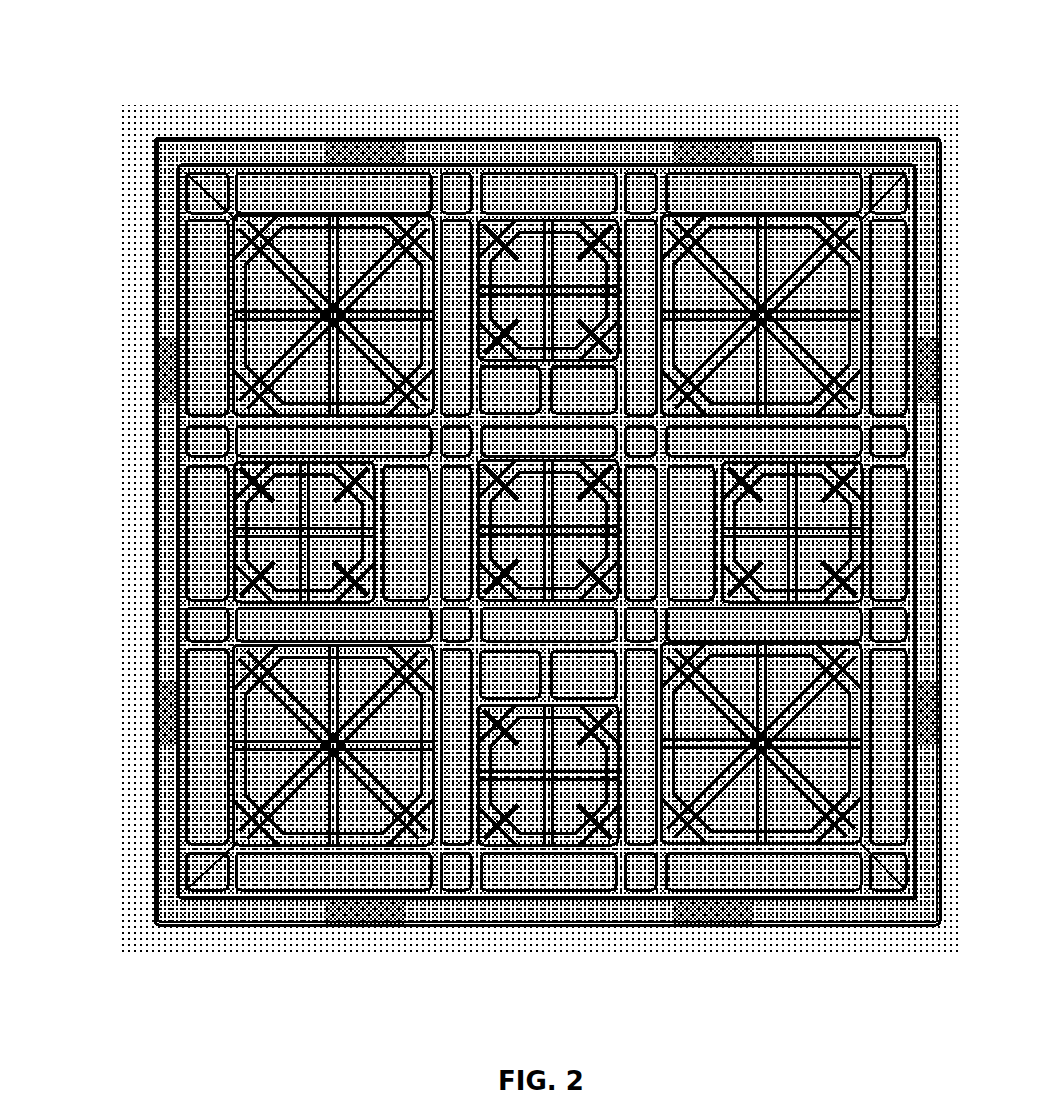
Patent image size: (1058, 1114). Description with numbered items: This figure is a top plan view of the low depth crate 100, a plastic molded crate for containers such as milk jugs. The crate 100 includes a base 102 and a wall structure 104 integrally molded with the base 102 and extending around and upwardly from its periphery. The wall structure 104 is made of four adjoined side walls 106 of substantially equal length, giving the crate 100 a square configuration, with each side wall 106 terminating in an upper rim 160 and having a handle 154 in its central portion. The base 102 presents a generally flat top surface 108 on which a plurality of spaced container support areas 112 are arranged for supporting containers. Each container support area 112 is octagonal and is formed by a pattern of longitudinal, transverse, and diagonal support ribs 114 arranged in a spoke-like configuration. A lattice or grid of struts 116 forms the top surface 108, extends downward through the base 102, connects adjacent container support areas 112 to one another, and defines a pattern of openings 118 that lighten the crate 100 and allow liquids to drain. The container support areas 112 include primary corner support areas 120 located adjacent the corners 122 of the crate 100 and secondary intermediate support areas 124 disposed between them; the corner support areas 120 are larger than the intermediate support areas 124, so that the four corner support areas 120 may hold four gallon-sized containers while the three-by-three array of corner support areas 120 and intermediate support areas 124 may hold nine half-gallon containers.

The low depth crate 100 is at (240, 70).
The base 102 is at (485, 177).
The wall structure 104 is at (118, 180).
The side wall 106 is at (140, 857).
The top surface 108 is at (613, 172).
The container support area 112 is at (212, 270).
The support rib 114 is at (282, 832).
The strut 116 is at (183, 620).
The opening 118 is at (200, 673).
The corner support area 120 is at (335, 305).
The corner 122 is at (910, 905).
The intermediate support area 124 is at (552, 213).
The handle 154 is at (148, 508).
The upper rim 160 is at (923, 220).